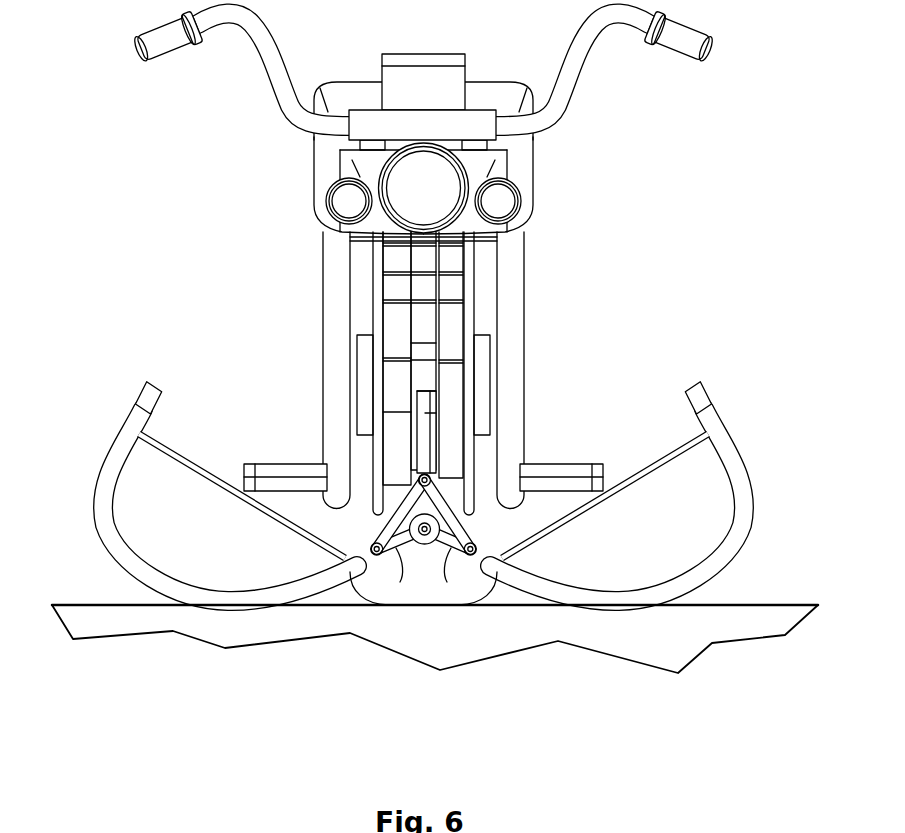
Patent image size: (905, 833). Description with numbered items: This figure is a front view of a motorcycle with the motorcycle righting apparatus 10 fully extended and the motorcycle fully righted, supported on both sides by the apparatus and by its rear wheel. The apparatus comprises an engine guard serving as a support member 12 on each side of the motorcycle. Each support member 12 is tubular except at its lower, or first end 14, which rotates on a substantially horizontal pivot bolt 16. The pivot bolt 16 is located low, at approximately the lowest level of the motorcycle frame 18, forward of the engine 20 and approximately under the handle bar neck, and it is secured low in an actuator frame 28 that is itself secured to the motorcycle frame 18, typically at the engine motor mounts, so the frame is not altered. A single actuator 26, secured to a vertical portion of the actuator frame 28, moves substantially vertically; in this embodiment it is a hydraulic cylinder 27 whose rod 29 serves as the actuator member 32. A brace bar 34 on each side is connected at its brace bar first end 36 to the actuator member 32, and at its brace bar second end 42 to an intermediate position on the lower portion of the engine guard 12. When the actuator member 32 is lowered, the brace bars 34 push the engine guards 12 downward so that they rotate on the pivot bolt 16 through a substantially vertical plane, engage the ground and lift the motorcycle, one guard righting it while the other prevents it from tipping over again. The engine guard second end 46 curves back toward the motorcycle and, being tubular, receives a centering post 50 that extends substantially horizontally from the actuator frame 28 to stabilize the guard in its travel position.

The motorcycle righting apparatus 10 is at (228, 352).
The support member 12 is at (118, 548).
The first end 14 is at (373, 566).
The pivot bolt 16 is at (426, 536).
The motorcycle frame 18 is at (378, 345).
The engine 20 is at (483, 350).
The actuator 26 is at (422, 286).
The hydraulic cylinder 27 is at (422, 310).
The actuator frame 28 is at (439, 317).
The rod 29 is at (427, 415).
The actuator member 32 is at (422, 427).
The brace bar 34 is at (397, 513).
The brace bar first end 36 is at (413, 485).
The brace bar second end 42 is at (393, 543).
The engine guard second end 46 is at (143, 398).
The centering post 50 is at (348, 228).